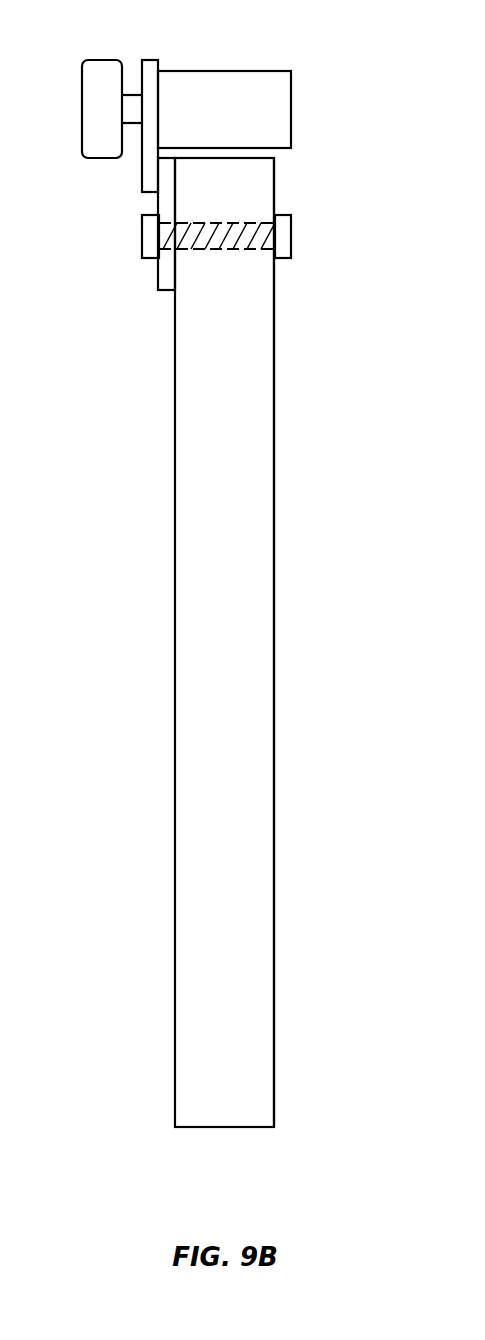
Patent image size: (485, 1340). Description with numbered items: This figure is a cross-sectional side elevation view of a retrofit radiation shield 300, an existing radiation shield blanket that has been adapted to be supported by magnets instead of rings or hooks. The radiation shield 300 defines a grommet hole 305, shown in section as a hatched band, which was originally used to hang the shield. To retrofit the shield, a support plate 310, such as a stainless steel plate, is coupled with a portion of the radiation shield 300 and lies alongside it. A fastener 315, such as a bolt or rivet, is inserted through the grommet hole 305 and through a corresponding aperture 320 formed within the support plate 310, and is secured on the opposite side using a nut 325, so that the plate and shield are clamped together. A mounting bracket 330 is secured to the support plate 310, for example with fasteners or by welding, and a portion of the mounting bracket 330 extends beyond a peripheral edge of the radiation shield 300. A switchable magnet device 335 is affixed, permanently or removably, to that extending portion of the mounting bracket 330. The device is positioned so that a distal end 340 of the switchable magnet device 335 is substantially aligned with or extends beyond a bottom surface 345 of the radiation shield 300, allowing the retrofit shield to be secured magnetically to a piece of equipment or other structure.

The retrofit radiation shield 300 is at (175, 668).
The grommet hole 305 is at (250, 223).
The support plate 310 is at (158, 212).
The fastener 315 is at (142, 228).
The aperture 320 is at (172, 250).
The nut 325 is at (291, 247).
The mounting bracket 330 is at (142, 62).
The switchable magnet device 335 is at (82, 88).
The distal end 340 is at (291, 112).
The bottom surface 345 is at (277, 343).